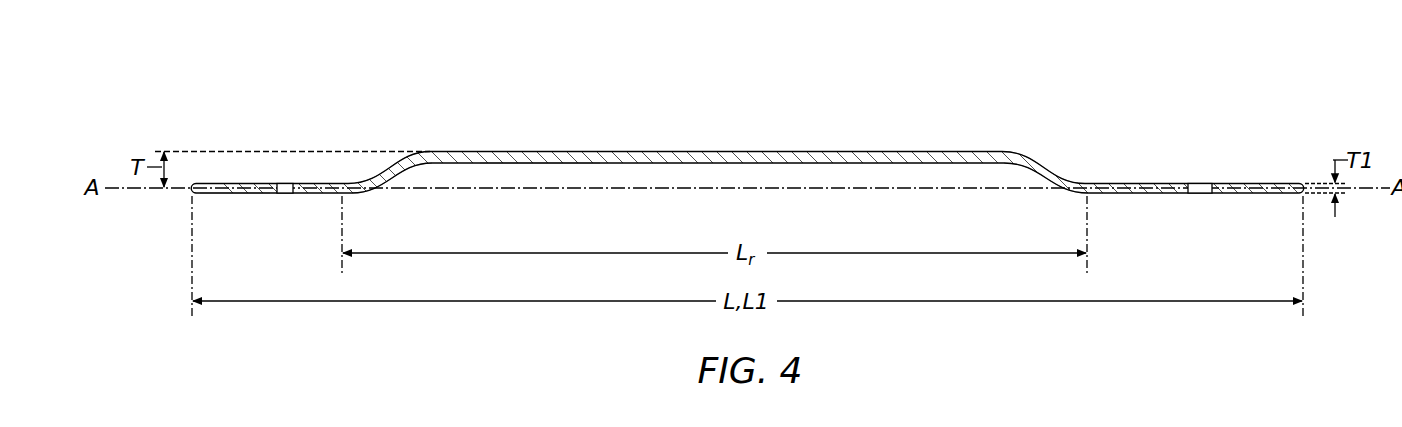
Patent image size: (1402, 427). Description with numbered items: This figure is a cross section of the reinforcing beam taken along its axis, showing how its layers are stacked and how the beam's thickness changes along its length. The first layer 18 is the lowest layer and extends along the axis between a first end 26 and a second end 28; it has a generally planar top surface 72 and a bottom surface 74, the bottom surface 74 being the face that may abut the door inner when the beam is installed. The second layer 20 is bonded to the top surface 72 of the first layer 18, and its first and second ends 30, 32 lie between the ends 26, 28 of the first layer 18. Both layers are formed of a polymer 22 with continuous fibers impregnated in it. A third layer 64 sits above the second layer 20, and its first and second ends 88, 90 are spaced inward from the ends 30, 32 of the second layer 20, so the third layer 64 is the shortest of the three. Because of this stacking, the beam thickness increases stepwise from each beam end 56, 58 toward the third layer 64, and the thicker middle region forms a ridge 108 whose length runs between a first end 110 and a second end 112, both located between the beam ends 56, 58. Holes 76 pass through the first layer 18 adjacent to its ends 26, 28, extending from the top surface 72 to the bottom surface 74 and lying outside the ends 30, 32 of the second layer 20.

The first layer 18 is at (1125, 182).
The second layer 20 is at (898, 150).
The polymer 22 is at (690, 157).
The first end of the first layer 26 is at (192, 183).
The second end of the first layer 28 is at (1303, 182).
The first end of the second layer 30 is at (428, 150).
The second end of the second layer 32 is at (1002, 151).
The first end of the reinforcing beam 56 is at (188, 195).
The second end of the reinforcing beam 58 is at (1308, 196).
The third layer 64 is at (742, 150).
The top surface of the first layer 72 is at (312, 184).
The bottom surface of the first layer 74 is at (226, 194).
The holes 76 is at (284, 194).
The first end of the third layer 88 is at (597, 150).
The second end of the third layer 90 is at (826, 150).
The ridge 108 is at (538, 165).
The first end of the ridge 110 is at (1068, 195).
The second end of the ridge 112 is at (366, 195).